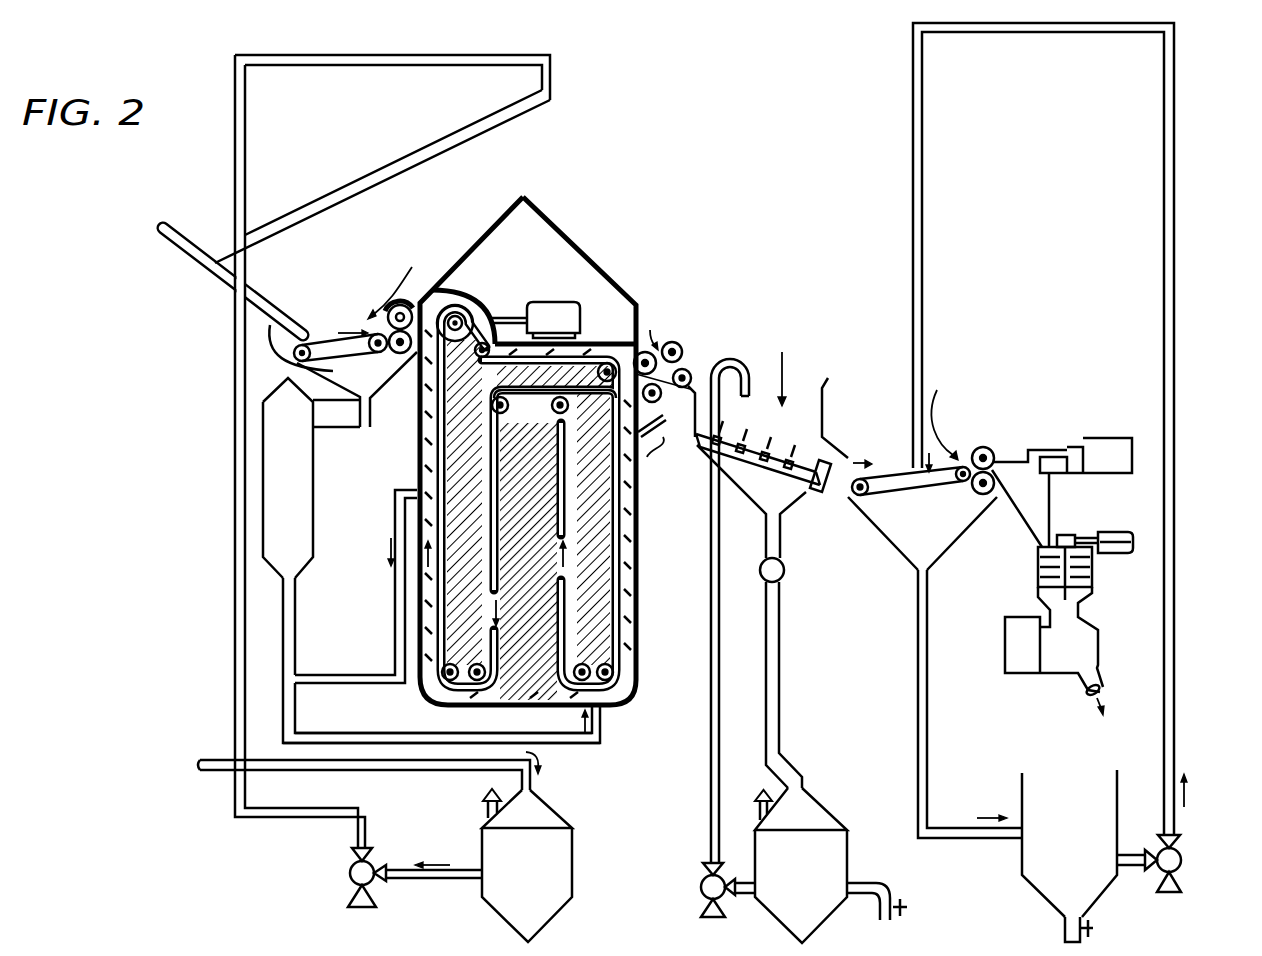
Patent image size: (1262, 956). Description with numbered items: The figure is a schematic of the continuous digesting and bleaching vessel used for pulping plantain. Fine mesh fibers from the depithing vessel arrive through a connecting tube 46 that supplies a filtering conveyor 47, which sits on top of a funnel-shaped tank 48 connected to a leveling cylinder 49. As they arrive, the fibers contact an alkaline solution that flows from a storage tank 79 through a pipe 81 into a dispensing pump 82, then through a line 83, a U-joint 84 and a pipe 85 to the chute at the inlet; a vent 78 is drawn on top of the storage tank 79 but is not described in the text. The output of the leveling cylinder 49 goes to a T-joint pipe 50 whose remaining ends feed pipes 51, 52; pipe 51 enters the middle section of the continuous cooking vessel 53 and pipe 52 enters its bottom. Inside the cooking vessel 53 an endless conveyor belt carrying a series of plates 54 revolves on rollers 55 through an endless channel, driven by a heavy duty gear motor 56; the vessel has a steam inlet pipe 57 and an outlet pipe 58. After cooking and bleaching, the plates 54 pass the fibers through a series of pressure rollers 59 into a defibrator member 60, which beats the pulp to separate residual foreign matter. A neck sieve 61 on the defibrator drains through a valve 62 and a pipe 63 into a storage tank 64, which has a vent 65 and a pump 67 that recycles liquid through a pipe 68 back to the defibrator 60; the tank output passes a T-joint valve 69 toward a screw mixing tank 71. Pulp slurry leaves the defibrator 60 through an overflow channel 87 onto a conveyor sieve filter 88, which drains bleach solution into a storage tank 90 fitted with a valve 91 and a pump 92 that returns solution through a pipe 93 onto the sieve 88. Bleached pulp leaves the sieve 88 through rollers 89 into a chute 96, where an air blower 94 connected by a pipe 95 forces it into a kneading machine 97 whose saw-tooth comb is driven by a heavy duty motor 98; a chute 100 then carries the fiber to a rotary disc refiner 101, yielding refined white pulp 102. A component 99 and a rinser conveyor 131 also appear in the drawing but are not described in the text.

The connecting tube 46 is at (277, 298).
The filtering conveyor 47 is at (336, 336).
The funnel-shaped tank 48 is at (383, 380).
The leveling cylinder 49 is at (311, 452).
The T-joint pipe 50 is at (283, 712).
The pipe 51 is at (395, 628).
The pipe 52 is at (428, 734).
The continuous cooking vessel 53 is at (639, 578).
The plates 54 is at (628, 613).
The rollers 55 is at (609, 668).
The heavy duty gear motor 56 is at (490, 298).
The steam inlet pipe 57 is at (671, 464).
The outlet pipe 58 is at (671, 403).
The pressure rollers 59 is at (684, 352).
The defibrator member 60 is at (800, 518).
The neck sieve 61 is at (764, 518).
The valve 62 is at (760, 580).
The pipe 63 is at (780, 722).
The storage tank 64 is at (850, 862).
The vent 65 is at (759, 796).
The pump 67 is at (700, 885).
The pipe 68 is at (711, 816).
The T-joint valve 69 is at (907, 907).
The screw mixing tank 71 is at (345, 771).
The vent 78 is at (482, 804).
The storage tank 79 is at (573, 875).
The pipe 81 is at (418, 881).
The dispensing pump 82 is at (350, 882).
The line 83 is at (235, 712).
The U-joint 84 is at (551, 96).
The pipe 85 is at (314, 195).
The overflow channel 87 is at (848, 452).
The conveyor sieve filter 88 is at (921, 490).
The rollers 89 is at (995, 450).
The storage tank 90 is at (1117, 808).
The valve 91 is at (1062, 930).
The pump 92 is at (1181, 860).
The pipe 93 is at (1175, 758).
The air blower 94 is at (1093, 468).
The pipe 95 is at (1049, 449).
The chute 96 is at (1047, 515).
The kneading machine 97 is at (1092, 582).
The heavy duty motor 98 is at (1137, 545).
The separator housing 99 is at (1038, 573).
The chute 100 is at (1086, 616).
The rotary disc refiner 101 is at (1005, 650).
The refined white pulp 102 is at (1110, 711).
The rinser conveyor 131 is at (893, 492).